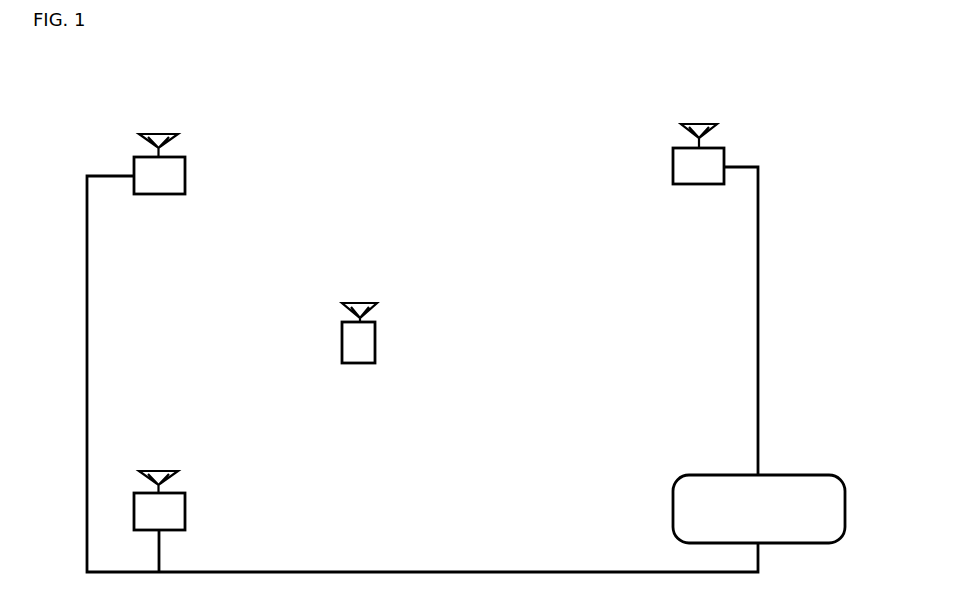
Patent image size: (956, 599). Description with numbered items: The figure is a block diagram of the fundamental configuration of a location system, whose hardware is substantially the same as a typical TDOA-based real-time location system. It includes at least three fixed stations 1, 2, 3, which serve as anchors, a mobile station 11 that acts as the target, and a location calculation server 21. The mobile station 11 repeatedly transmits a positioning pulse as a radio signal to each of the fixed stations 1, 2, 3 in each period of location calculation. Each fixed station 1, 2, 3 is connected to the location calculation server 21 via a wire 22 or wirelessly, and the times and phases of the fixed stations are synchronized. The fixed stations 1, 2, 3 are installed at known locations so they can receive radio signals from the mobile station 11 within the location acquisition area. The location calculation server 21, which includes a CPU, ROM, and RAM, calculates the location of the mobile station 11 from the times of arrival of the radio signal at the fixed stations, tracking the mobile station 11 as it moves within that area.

The fixed station 1 is at (185, 172).
The fixed station 2 is at (673, 170).
The fixed station 3 is at (185, 505).
The mobile station 11 is at (375, 335).
The location calculation server 21 is at (673, 512).
The wire 22 is at (445, 572).